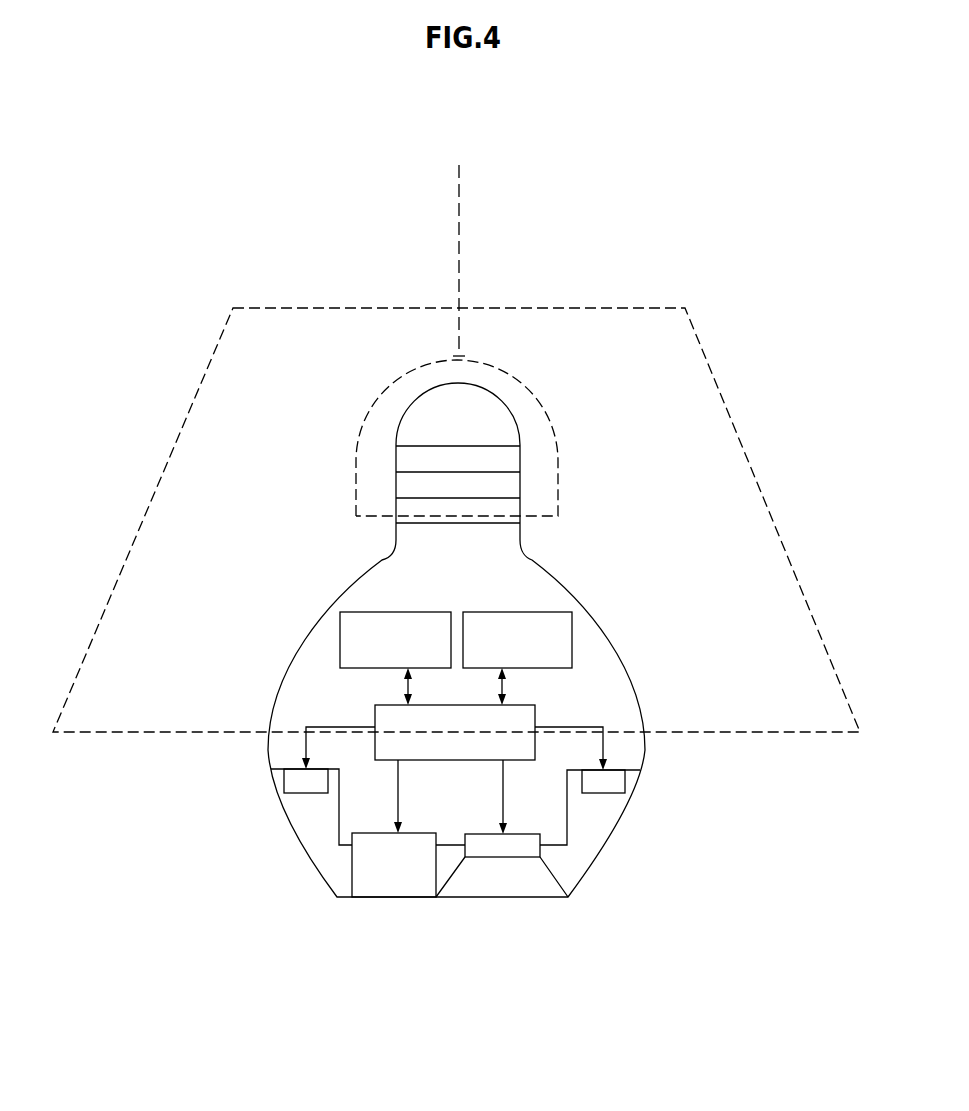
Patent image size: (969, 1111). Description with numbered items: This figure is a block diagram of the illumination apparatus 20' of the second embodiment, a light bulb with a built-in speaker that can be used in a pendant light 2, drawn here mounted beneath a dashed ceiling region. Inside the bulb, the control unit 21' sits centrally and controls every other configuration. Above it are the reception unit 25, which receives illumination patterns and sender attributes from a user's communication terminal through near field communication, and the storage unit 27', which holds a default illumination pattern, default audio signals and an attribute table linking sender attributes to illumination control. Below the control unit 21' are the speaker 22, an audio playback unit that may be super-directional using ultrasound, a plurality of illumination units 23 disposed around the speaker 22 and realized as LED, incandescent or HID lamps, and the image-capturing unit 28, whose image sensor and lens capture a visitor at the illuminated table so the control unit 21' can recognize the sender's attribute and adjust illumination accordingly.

The pendant light 2 is at (702, 350).
The illumination apparatus 20' is at (474, 640).
The control unit 21' is at (529, 717).
The speaker 22 is at (525, 890).
The illumination unit 23 is at (297, 795).
The reception unit 25 is at (380, 612).
The storage unit 27' is at (543, 622).
The image-capturing unit 28 is at (387, 890).